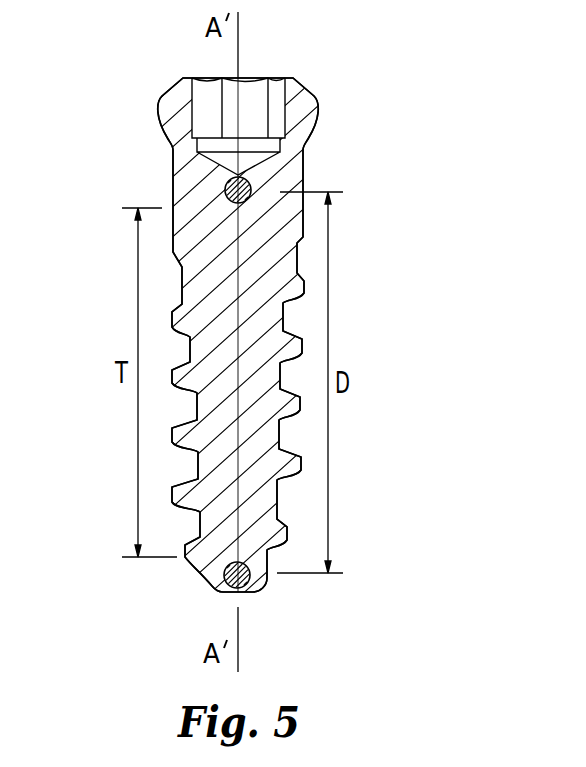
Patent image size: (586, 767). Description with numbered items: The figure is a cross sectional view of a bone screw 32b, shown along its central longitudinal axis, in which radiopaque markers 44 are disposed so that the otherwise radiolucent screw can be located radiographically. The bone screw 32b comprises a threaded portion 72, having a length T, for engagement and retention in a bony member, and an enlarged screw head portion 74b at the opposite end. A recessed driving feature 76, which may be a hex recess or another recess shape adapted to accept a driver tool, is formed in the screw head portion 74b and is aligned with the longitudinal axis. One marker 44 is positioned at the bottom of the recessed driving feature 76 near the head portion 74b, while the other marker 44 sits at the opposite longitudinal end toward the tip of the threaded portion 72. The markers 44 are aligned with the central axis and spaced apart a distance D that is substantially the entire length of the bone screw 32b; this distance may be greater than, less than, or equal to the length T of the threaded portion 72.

The bone screw 32b is at (244, 383).
The screw head portion 74b is at (283, 100).
The recessed driving feature 76 is at (253, 103).
The radiopaque markers 44 is at (228, 186).
The threaded portion 72 is at (305, 287).